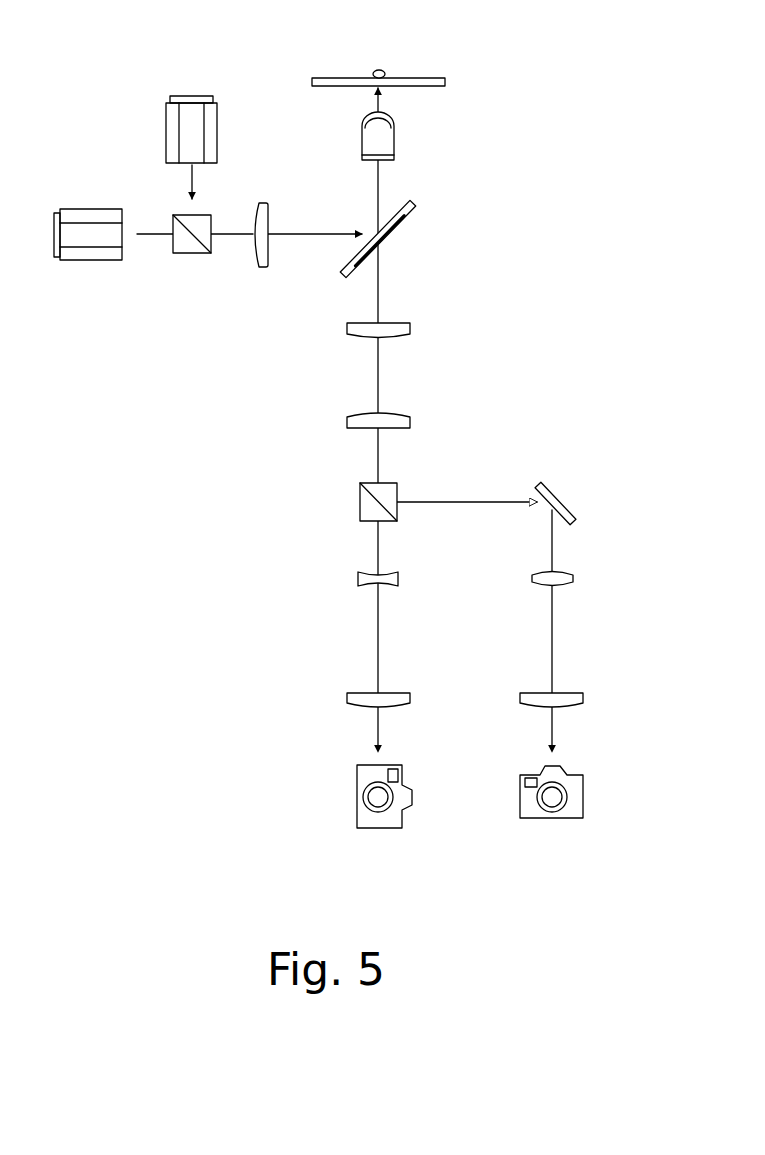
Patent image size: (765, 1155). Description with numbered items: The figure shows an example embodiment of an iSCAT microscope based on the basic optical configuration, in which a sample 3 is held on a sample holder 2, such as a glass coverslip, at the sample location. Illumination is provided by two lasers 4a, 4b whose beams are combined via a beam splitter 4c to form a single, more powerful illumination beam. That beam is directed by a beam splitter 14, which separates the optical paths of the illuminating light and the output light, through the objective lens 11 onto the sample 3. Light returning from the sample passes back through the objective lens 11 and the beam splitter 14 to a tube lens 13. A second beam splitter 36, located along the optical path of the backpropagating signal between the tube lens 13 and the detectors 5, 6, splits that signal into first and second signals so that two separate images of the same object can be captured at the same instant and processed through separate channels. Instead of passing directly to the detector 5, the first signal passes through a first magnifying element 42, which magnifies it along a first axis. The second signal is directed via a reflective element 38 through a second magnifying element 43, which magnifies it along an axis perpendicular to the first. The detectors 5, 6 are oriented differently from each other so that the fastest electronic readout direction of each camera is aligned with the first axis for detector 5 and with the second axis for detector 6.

The sample holder 2 is at (312, 82).
The sample 3 is at (372, 71).
The laser 4a is at (166, 115).
The laser 4b is at (92, 208).
The beam splitter 4c is at (173, 254).
The objective lens 11 is at (396, 140).
The tube lens 13 is at (410, 330).
The beam splitter 14 is at (410, 218).
The second beam splitter 36 is at (385, 521).
The reflective element 38 is at (565, 500).
The first magnifying element 42 is at (365, 588).
The second magnifying element 43 is at (537, 588).
The detector 5 is at (358, 822).
The second detector 6 is at (530, 818).